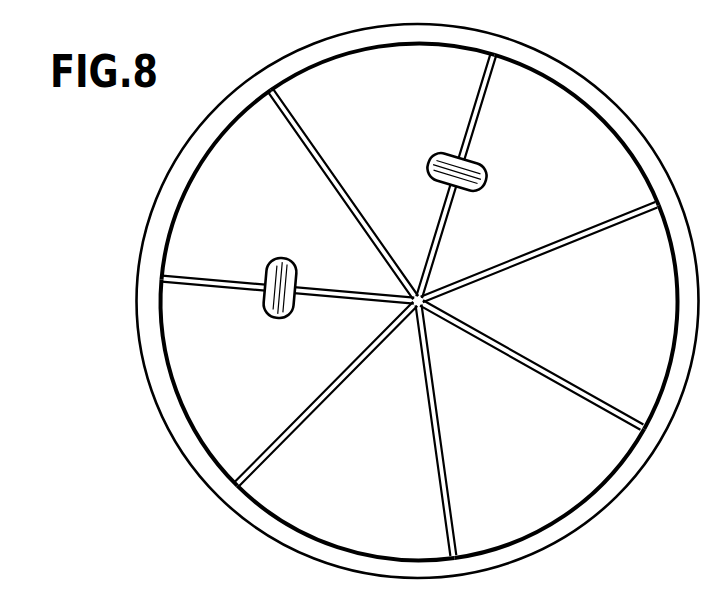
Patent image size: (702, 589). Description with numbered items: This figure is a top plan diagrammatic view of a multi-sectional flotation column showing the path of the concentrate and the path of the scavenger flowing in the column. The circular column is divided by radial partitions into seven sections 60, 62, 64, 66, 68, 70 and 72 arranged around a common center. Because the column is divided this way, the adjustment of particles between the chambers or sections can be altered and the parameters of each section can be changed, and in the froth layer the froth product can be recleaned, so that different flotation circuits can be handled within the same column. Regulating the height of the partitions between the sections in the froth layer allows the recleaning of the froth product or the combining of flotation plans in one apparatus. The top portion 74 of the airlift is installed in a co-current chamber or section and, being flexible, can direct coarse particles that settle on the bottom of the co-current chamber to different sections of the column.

The section 60 is at (220, 383).
The section 62 is at (227, 202).
The section 64 is at (360, 119).
The section 66 is at (541, 167).
The section 68 is at (545, 321).
The section 70 is at (491, 468).
The section 72 is at (340, 485).
The top portion of the airlift 74 is at (296, 273).